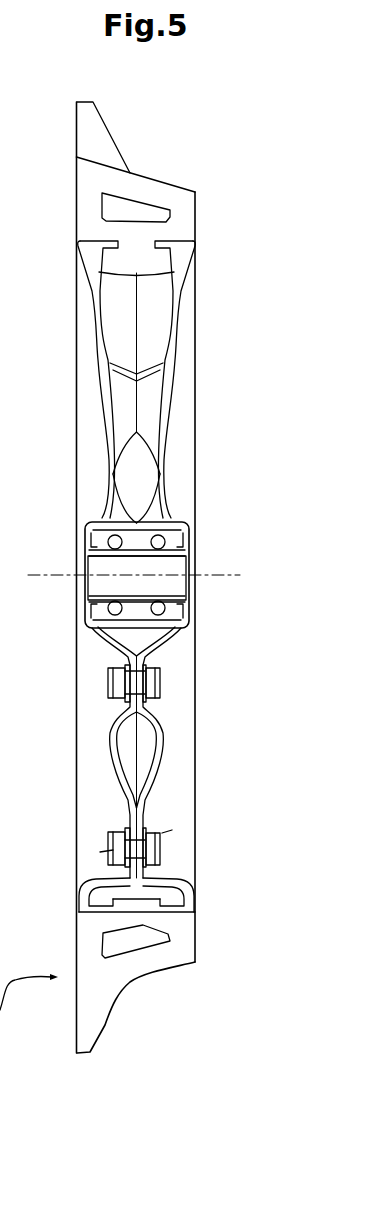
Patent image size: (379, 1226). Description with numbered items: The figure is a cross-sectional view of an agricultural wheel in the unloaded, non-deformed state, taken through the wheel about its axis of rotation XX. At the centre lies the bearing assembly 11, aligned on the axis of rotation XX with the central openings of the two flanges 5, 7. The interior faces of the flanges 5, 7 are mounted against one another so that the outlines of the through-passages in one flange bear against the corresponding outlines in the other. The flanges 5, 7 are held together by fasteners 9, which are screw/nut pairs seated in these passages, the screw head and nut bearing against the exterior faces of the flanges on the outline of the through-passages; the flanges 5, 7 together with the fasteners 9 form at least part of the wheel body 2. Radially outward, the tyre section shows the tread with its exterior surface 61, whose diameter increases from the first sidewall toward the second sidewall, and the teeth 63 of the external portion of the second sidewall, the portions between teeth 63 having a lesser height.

The wheel body 2 is at (182, 319).
The flange 5 is at (174, 733).
The flange 7 is at (103, 733).
The fasteners 9 is at (114, 683).
The bearing assembly 11 is at (182, 517).
The exterior surface 61 is at (103, 158).
The teeth 63 is at (98, 1015).
The axis of rotation XX is at (40, 575).